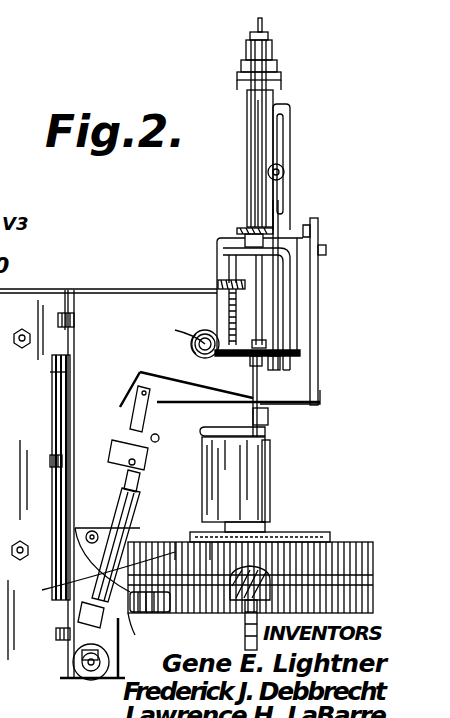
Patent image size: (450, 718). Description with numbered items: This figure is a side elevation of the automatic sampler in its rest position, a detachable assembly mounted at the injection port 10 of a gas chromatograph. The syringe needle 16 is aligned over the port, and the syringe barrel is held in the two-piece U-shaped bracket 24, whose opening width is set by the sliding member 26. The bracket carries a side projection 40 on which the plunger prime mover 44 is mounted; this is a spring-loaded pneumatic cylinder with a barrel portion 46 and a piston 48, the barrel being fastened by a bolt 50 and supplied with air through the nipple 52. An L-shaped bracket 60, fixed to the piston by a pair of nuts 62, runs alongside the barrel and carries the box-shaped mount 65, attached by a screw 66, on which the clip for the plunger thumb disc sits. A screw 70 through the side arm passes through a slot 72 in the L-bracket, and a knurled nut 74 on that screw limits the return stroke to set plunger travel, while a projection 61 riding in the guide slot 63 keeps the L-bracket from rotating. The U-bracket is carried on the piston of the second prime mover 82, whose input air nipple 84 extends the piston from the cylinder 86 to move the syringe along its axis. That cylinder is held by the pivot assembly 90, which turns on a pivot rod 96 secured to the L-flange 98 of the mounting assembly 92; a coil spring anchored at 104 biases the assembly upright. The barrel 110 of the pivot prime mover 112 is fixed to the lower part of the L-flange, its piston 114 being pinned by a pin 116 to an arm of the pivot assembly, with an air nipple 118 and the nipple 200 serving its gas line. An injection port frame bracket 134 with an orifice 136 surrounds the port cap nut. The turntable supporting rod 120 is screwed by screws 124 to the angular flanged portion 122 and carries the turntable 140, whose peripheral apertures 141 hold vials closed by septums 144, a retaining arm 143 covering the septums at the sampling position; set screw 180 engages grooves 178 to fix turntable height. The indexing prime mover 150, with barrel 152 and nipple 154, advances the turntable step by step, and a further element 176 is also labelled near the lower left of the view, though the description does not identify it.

The injection port 10 is at (52, 390).
The needle 16 is at (268, 424).
The U-shaped bracket 24 is at (278, 370).
The sliding member 26 is at (302, 240).
The side projection 40 is at (310, 335).
The prime mover 44 is at (249, 98).
The barrel portion 46 is at (257, 118).
The piston 48 is at (262, 305).
The bolt 50 is at (292, 268).
The nipple 52 is at (248, 238).
The L-shaped bracket 60 is at (279, 322).
The projection 61 is at (288, 352).
The nuts 62 is at (258, 366).
The guide slot 63 is at (286, 120).
The box-shaped mount 65 is at (282, 158).
The screw 66 is at (284, 170).
The screw 70 is at (239, 317).
The slot 72 is at (220, 358).
The knurled nut 74 is at (217, 284).
The second prime mover 82 is at (278, 80).
The input air nipple 84 is at (257, 30).
The cylinder 86 is at (282, 92).
The pivot assembly 90 is at (202, 330).
The mounting assembly 92 is at (66, 288).
The pivot rod 96 is at (174, 323).
The L-flange 98 is at (268, 414).
The spring end securing point 104 is at (192, 342).
The barrel 110 is at (135, 494).
The pivot prime mover 112 is at (120, 494).
The piston 114 is at (116, 452).
The pin 116 is at (136, 402).
The air nipple 118 is at (75, 654).
The turntable supporting rod 120 is at (245, 636).
The angular flanged portion 122 is at (270, 515).
The screws 124 is at (266, 490).
The injection port frame bracket 134 is at (50, 375).
The orifice 136 is at (66, 318).
The turntable 140 is at (85, 566).
The apertures 141 is at (176, 541).
The retaining arm 143 is at (268, 535).
The cap or septum 144 is at (322, 542).
The indexing prime mover 150 is at (108, 575).
The barrel 152 is at (140, 640).
The nipple 154 is at (160, 612).
The arm end 176 is at (88, 610).
The grooves 178 is at (236, 612).
The set screw 180 is at (212, 542).
The nipple 200 is at (104, 678).